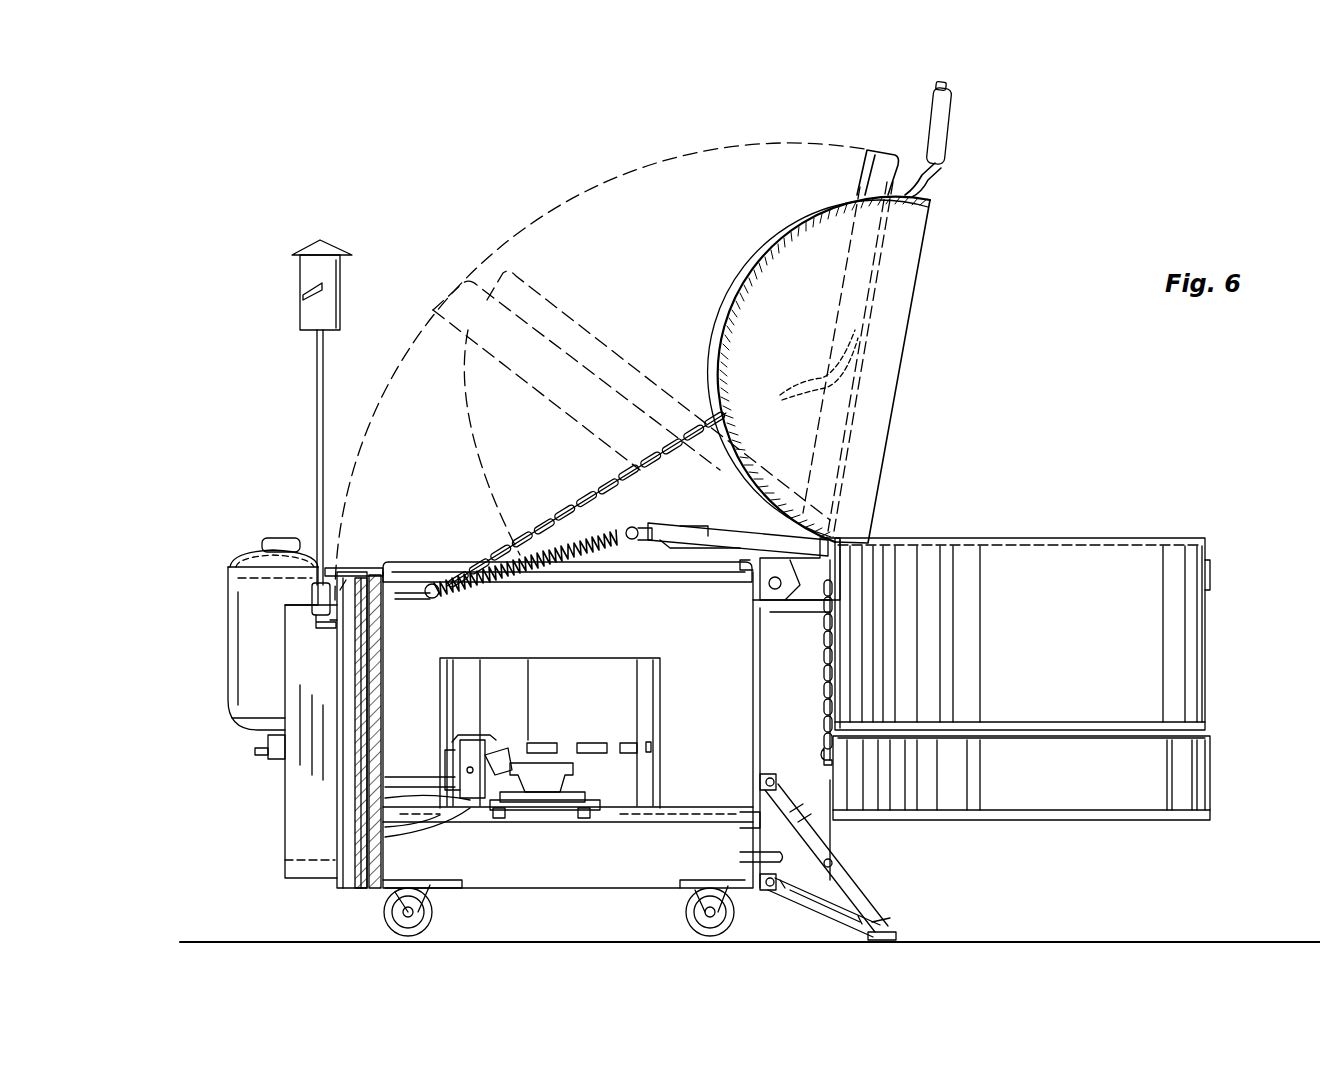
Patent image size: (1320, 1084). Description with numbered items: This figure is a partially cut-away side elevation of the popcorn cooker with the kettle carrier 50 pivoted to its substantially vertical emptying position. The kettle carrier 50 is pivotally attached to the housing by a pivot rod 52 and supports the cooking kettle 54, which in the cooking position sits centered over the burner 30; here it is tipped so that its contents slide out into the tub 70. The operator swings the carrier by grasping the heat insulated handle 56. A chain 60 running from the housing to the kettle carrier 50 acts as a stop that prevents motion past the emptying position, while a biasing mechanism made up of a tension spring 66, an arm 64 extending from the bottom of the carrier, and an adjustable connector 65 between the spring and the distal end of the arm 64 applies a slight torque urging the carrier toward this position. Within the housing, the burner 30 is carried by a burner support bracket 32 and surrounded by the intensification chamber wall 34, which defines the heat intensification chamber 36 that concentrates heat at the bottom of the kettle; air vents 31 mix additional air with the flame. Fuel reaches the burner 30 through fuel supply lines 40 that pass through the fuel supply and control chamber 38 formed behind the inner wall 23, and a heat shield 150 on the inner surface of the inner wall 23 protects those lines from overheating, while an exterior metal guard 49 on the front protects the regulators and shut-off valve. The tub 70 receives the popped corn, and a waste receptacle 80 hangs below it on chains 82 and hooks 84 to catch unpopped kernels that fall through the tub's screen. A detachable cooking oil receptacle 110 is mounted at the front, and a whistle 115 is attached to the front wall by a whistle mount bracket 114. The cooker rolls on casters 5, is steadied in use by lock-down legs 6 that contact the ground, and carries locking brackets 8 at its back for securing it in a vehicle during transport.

The casters 5 is at (440, 910).
The legs 6 is at (855, 885).
The locking brackets 8 is at (790, 855).
The inner wall 23 is at (373, 565).
The burner 30 is at (545, 770).
The air vents 31 is at (622, 740).
The burner support bracket 32 is at (580, 812).
The intensification chamber wall 34 is at (662, 692).
The heat intensification chamber 36 is at (625, 770).
The fuel supply and control chamber 38 is at (355, 853).
The fuel supply lines 40 is at (408, 780).
The exterior metal guard 49 is at (298, 797).
The kettle carrier 50 is at (880, 150).
The pivot rod 52 is at (773, 590).
The cooking kettle 54 is at (772, 245).
The heat insulated handle 56 is at (948, 122).
The chain 60 is at (515, 525).
The arm 64 is at (730, 560).
The adjustable connector 65 is at (630, 526).
The tension spring 66 is at (525, 575).
The tub 70 is at (1115, 565).
The waste receptacle 80 is at (1185, 765).
The chains 82 is at (825, 680).
The hooks 84 is at (820, 760).
The cooking oil receptacle 110 is at (238, 675).
The whistle mount bracket 114 is at (311, 596).
The whistle 115 is at (313, 285).
The heat shield 150 is at (378, 888).